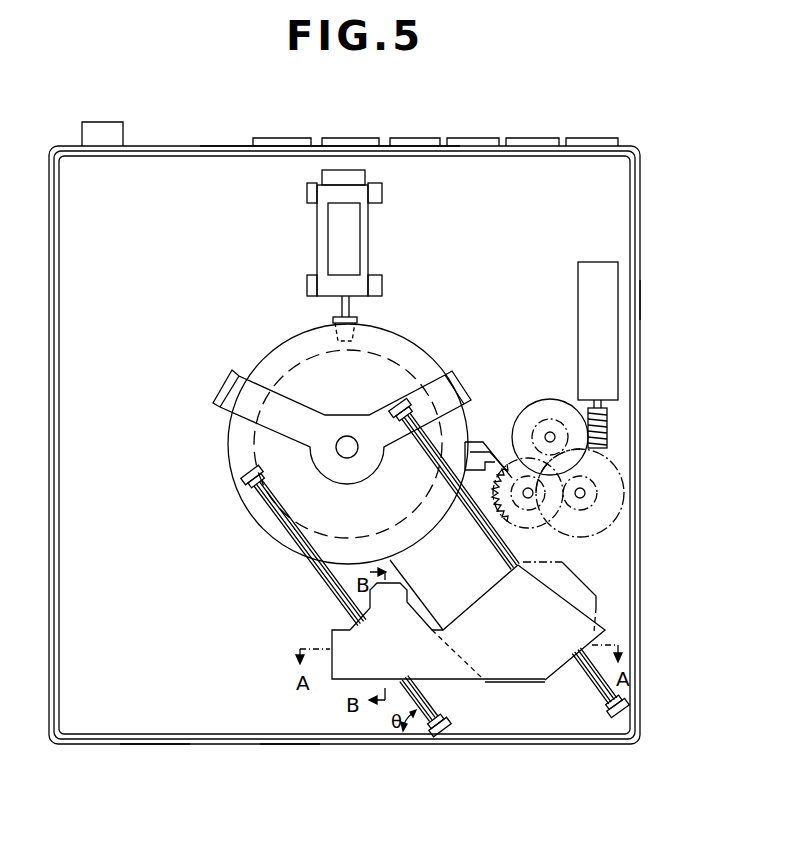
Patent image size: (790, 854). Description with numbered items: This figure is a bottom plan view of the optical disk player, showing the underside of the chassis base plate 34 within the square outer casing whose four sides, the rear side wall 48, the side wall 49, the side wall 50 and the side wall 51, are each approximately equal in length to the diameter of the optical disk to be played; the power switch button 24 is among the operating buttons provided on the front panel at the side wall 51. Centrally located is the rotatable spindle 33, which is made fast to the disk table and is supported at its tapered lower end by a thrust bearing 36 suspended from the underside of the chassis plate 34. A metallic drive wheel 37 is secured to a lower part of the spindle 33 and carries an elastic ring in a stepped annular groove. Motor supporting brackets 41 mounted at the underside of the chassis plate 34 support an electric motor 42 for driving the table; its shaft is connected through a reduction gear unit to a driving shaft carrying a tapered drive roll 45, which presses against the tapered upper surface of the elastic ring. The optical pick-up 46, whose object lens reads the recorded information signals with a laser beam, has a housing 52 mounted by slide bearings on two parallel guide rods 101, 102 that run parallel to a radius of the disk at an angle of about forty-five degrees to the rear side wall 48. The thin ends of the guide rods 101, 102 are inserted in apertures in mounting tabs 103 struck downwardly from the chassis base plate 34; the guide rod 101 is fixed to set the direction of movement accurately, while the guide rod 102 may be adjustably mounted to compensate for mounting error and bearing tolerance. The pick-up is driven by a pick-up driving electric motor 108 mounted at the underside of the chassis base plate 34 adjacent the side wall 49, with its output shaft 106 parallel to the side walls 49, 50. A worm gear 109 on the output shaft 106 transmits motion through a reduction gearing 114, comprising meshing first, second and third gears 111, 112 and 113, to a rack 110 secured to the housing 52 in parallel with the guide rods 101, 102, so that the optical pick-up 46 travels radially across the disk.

The power switch button 24 is at (104, 130).
The rotatable spindle 33 is at (253, 440).
The chassis base plate 34 is at (155, 723).
The thrust bearing 36 is at (348, 472).
The metallic drive wheel 37 is at (395, 348).
The motor supporting brackets 41 is at (317, 240).
The electric motor 42 is at (354, 237).
The tapered drive roll 45 is at (333, 320).
The optical pick-up 46 is at (332, 634).
The rear side wall 48 is at (290, 740).
The side wall 49 is at (642, 297).
The side wall 50 is at (50, 452).
The side wall 51 is at (197, 152).
The housing 52 is at (460, 668).
The guide rod 101 is at (326, 576).
The guide rod 102 is at (466, 420).
The mounting tabs 103 is at (410, 392).
The output shaft 106 is at (608, 405).
The pick-up driving electric motor 108 is at (610, 357).
The worm gear 109 is at (608, 430).
The rack 110 is at (500, 478).
The first gear 111 is at (548, 410).
The second gear 112 is at (624, 520).
The third gear 113 is at (499, 506).
The reduction gearing 114 is at (683, 506).